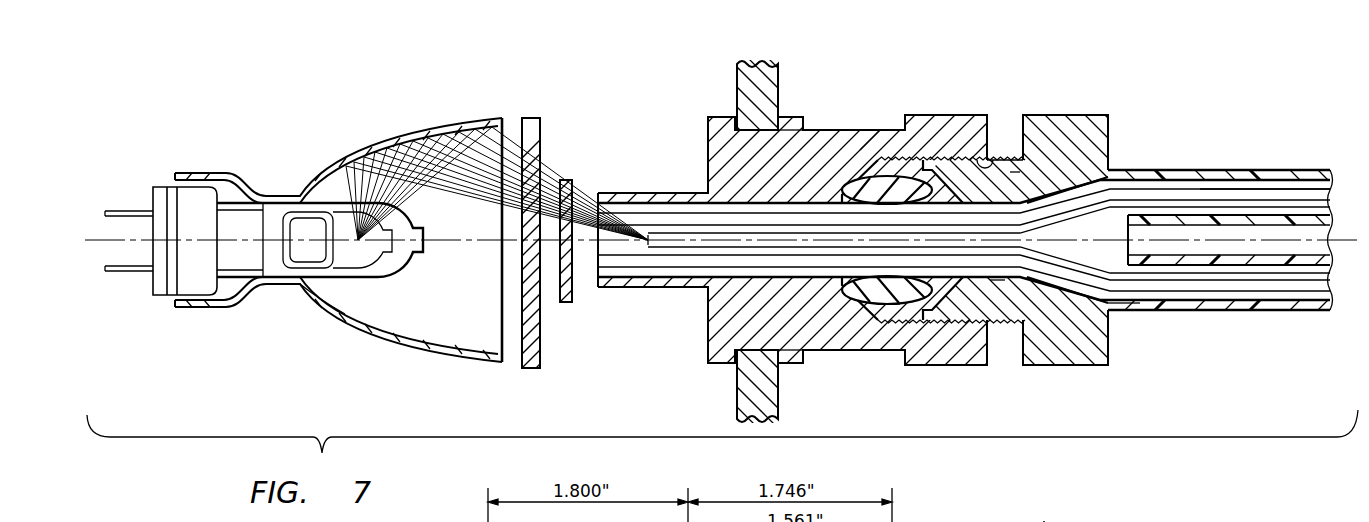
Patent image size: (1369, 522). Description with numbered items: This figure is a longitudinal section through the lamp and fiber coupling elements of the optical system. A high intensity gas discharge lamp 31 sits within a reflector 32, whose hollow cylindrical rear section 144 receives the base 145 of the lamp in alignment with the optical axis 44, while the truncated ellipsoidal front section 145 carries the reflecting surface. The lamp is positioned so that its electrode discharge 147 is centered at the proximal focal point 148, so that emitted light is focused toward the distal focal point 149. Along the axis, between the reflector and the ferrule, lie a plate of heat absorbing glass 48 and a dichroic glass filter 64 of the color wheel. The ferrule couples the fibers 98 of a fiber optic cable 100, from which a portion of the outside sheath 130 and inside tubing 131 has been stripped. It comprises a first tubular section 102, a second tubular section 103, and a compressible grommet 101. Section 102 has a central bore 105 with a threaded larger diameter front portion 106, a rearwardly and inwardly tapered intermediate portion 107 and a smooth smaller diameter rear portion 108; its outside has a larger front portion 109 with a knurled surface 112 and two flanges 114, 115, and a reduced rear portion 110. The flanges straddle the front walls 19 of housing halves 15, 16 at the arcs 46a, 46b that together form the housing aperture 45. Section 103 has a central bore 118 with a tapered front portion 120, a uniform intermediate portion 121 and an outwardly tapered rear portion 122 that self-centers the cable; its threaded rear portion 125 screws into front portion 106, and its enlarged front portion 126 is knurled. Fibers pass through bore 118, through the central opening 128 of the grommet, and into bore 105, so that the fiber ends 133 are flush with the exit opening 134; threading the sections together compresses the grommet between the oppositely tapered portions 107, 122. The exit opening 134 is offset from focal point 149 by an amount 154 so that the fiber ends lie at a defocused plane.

The housing top half 15 is at (778, 80).
The housing bottom half 16 is at (778, 405).
The front walls 19 is at (738, 398).
The gas discharge lamp 31 is at (192, 282).
The reflector 32 is at (362, 150).
The optical axis 44 is at (443, 243).
The aperture 45 is at (722, 352).
The upper arc 46a is at (806, 132).
The lower arc 46b is at (812, 350).
The heat absorbing glass plate 48 is at (536, 120).
The dichroic glass filter 64 is at (570, 180).
The fibers 98 is at (1300, 197).
The fiber optic cable 100 is at (1170, 307).
The grommet 101 is at (990, 160).
The first ferrule section 102 is at (893, 300).
The second ferrule section 103 is at (1100, 113).
The central bore 105 is at (640, 210).
The threaded front portion 106 is at (1005, 165).
The tapered intermediate portion 107 is at (884, 176).
The rear bore portion 108 is at (640, 276).
The front portion 109 is at (880, 135).
The rear portion 110 is at (610, 195).
The knurled outer surface 112 is at (945, 365).
The first flange 114 is at (822, 110).
The second flange 115 is at (728, 117).
The central bore 118 is at (1132, 303).
The tapered front portion 120 is at (1142, 168).
The intermediate portion 121 is at (998, 282).
The tapered rear portion 122 is at (902, 282).
The threaded rear portion 125 is at (1015, 170).
The enlarged front portion 126 is at (1060, 366).
The central opening 128 is at (905, 195).
The outside sheath 130 is at (1225, 172).
The inside tubing 131 is at (1235, 265).
The fiber ends 133 is at (597, 258).
The exit opening 134 is at (590, 250).
The cylindrical rear section 144 is at (252, 298).
The lamp base / reflector front section 145 is at (160, 285).
The electrode discharge 147 is at (345, 303).
The proximal focal point 148 is at (362, 266).
The distal focal point 149 is at (652, 236).
The offset amount 154 is at (1043, 521).